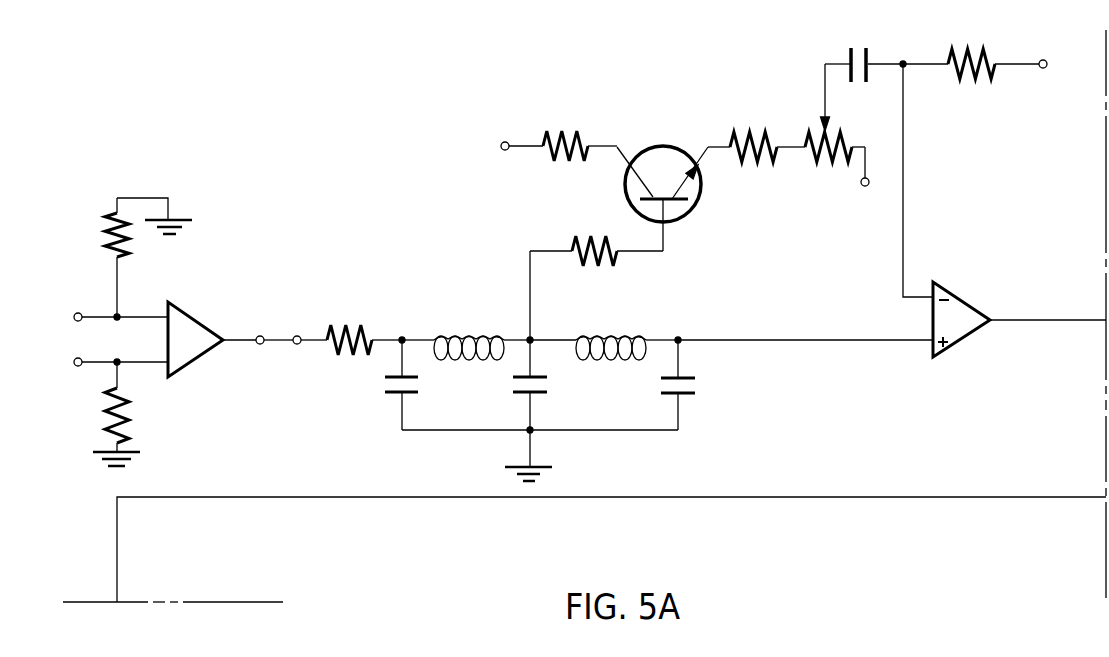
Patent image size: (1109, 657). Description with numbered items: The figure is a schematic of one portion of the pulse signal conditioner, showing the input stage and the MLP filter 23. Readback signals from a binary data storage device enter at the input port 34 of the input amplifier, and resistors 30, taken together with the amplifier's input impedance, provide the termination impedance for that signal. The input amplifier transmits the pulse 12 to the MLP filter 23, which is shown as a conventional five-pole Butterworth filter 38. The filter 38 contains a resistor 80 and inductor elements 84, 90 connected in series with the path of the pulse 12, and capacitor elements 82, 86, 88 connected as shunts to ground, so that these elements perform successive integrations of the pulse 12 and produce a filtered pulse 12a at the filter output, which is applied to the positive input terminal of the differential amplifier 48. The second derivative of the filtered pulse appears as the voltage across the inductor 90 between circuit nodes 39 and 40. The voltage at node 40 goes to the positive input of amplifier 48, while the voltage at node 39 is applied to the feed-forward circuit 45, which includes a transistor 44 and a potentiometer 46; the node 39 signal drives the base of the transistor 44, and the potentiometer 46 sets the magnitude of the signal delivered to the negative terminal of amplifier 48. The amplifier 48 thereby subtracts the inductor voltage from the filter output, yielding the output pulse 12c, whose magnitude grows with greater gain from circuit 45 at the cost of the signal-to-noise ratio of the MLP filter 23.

The pulse 12 is at (246, 325).
The filtered pulse 12a is at (753, 333).
The pulse 12c is at (1017, 311).
The MLP filter 23 is at (481, 538).
The resistors 30 is at (104, 220).
The input port 34 is at (87, 340).
The Butterworth filter 38 is at (536, 347).
The circuit node 39 is at (525, 333).
The circuit node 40 is at (680, 337).
The transistor 44 is at (672, 145).
The feed-forward circuit 45 is at (750, 137).
The potentiometer 46 is at (823, 90).
The differential amplifier 48 is at (967, 337).
The resistor 80 is at (347, 327).
The capacitor element 82 is at (422, 385).
The inductor element 84 is at (463, 333).
The capacitor element 86 is at (540, 385).
The capacitor element 88 is at (690, 383).
The inductor element 90 is at (610, 337).